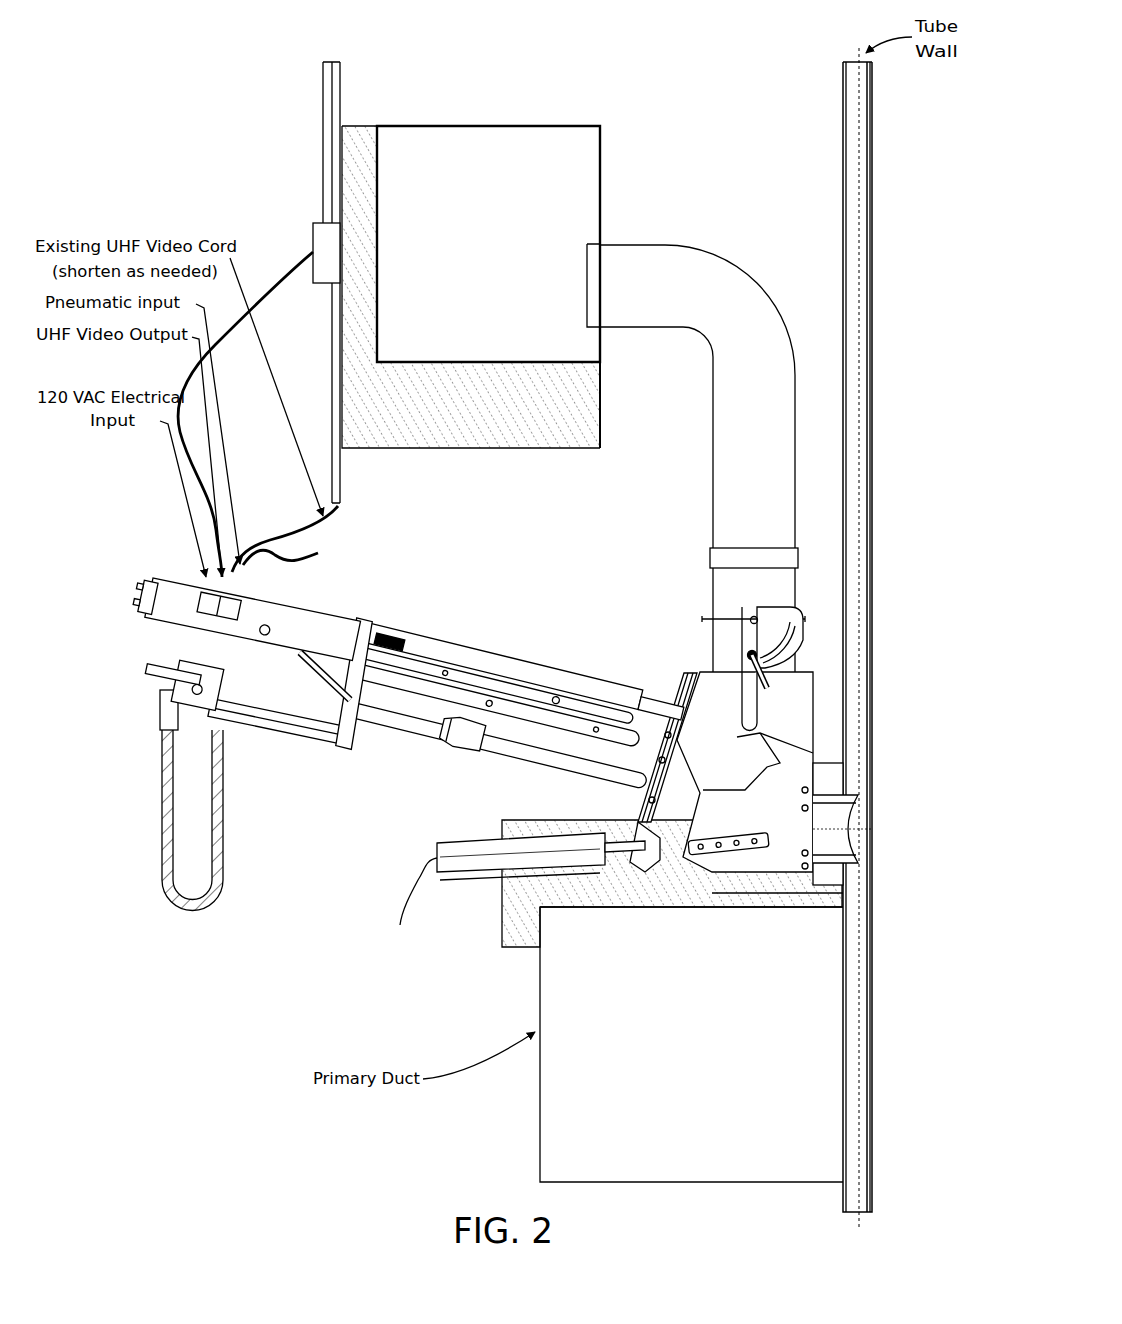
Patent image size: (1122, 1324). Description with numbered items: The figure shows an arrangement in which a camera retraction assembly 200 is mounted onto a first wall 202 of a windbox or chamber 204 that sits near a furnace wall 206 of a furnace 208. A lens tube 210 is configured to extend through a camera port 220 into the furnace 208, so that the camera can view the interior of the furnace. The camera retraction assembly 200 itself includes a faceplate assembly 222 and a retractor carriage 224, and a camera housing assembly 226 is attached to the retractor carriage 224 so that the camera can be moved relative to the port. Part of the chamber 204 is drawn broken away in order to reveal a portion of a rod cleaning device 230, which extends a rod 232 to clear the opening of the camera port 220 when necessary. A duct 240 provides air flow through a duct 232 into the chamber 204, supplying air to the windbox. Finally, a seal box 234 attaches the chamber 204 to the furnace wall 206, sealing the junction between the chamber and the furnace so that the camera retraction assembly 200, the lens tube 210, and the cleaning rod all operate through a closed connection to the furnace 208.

The camera retraction assembly 200 is at (549, 552).
The first wall 202 is at (676, 771).
The windbox or chamber 204 is at (813, 723).
The furnace wall 206 is at (872, 238).
The furnace 208 is at (945, 562).
The lens tube 210 is at (513, 760).
The camera port 220 is at (858, 830).
The faceplate assembly 222 is at (467, 640).
The retractor carriage 224 is at (283, 605).
The camera housing assembly 226 is at (250, 703).
The rod cleaning device 230 is at (404, 922).
The rod 232 is at (657, 243).
The seal box 234 is at (840, 763).
The duct 240 is at (572, 126).